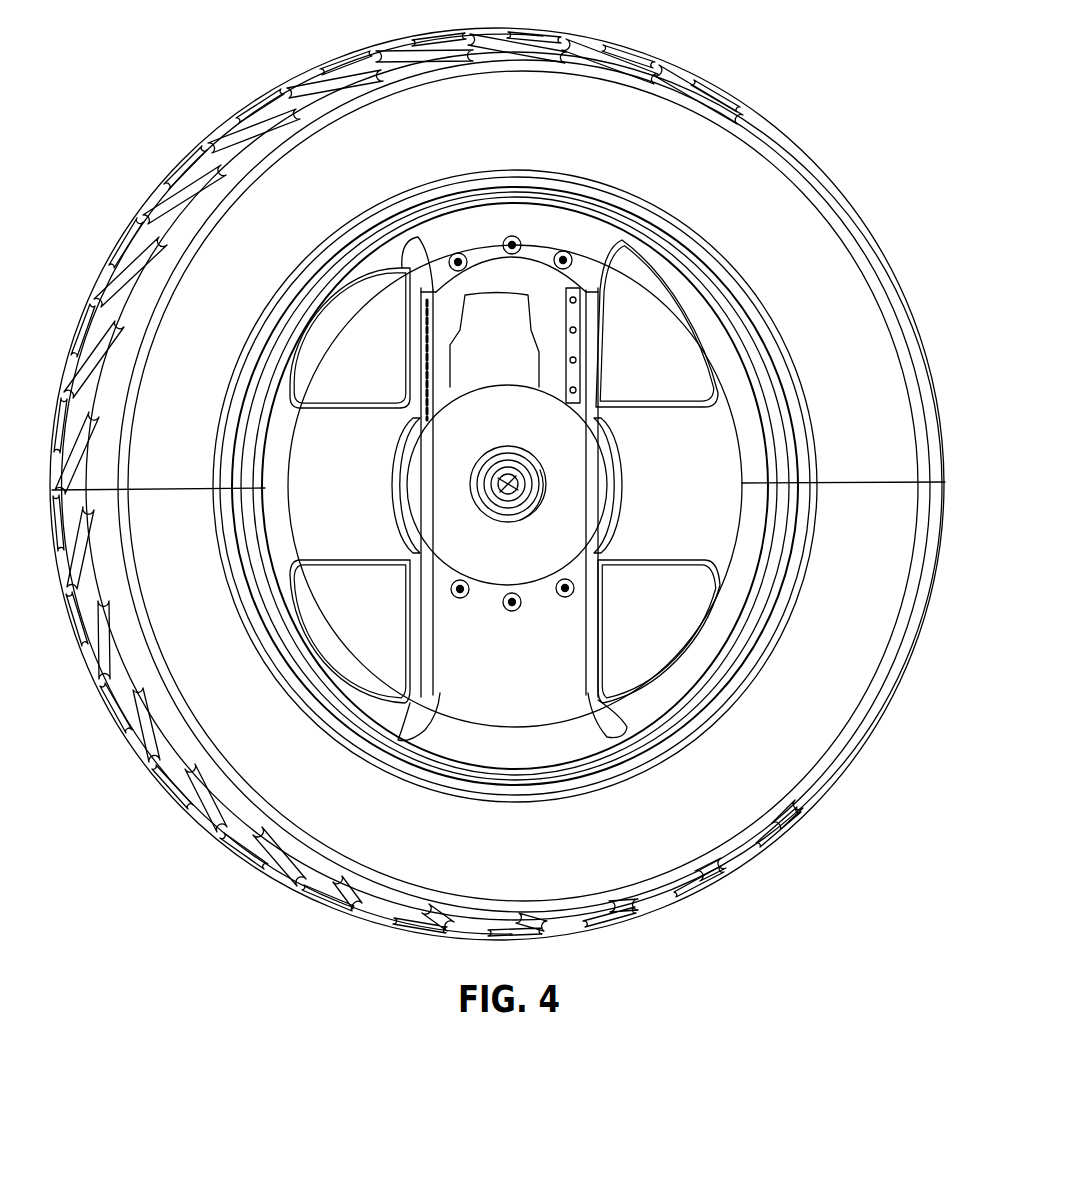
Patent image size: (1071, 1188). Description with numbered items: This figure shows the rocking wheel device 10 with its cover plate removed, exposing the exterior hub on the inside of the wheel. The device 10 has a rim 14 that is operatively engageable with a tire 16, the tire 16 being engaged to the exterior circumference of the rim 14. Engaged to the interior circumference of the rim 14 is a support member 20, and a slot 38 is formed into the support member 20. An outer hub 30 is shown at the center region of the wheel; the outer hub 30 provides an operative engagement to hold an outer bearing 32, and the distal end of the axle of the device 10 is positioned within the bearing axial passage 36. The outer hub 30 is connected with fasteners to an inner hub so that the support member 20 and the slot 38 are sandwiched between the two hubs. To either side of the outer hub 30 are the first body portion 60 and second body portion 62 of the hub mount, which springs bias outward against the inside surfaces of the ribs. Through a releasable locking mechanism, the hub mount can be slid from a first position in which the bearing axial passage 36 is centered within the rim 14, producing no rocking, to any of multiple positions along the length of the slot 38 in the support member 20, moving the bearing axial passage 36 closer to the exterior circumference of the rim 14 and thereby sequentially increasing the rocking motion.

The rocking wheel device 10 is at (808, 114).
The rim 14 is at (680, 732).
The tire 16 is at (808, 760).
The support member 20 is at (536, 296).
The outer hub 30 is at (570, 420).
The outer bearing 32 is at (523, 487).
The bearing axial passage 36 is at (507, 492).
The slot 38 is at (495, 330).
The first body portion 60 is at (407, 447).
The second body portion 62 is at (620, 430).